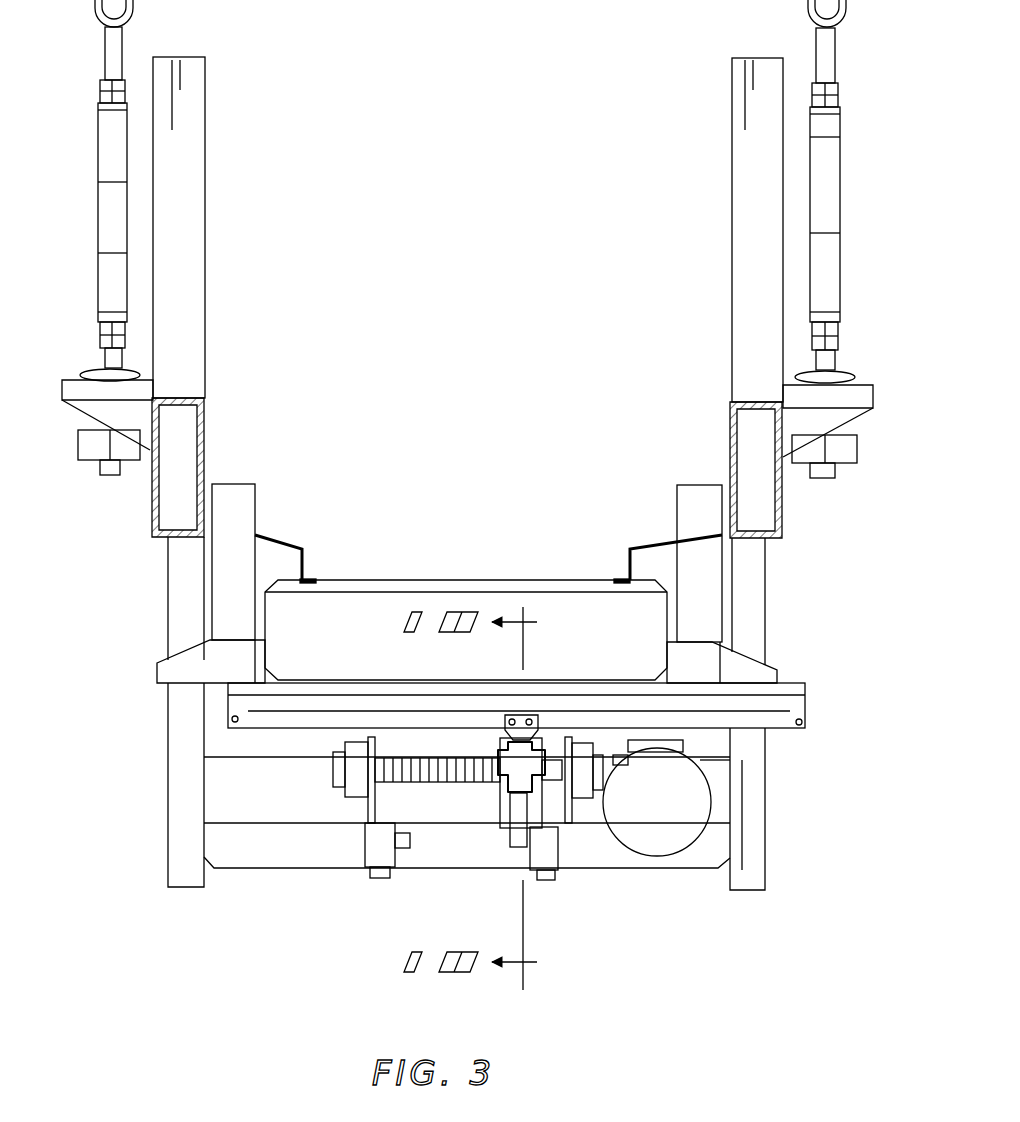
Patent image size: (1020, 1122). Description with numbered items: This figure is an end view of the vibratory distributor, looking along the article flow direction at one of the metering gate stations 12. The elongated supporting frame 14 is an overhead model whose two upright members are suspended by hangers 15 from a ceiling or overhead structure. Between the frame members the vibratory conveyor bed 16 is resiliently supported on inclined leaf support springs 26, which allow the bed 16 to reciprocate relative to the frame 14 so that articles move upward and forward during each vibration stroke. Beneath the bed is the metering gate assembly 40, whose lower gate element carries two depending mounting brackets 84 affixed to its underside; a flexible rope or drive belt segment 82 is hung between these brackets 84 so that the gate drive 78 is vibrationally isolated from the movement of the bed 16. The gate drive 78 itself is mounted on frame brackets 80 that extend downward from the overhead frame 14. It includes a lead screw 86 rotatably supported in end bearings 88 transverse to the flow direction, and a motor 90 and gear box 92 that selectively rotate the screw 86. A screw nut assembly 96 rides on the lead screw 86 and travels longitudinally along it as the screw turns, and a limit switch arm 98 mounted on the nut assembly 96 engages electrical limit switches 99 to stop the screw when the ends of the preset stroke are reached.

The metering gate station 12 is at (498, 508).
The supporting frame 14 is at (180, 228).
The hanger 15 is at (112, 222).
The vibratory conveyor bed 16 is at (352, 631).
The support spring 26 is at (235, 520).
The metering gate assembly 40 is at (790, 644).
The gate drive 78 is at (782, 783).
The frame bracket 80 is at (742, 812).
The drive belt segment 82 is at (300, 718).
The mounting bracket 84 is at (235, 705).
The lead screw 86 is at (480, 790).
The end bearing 88 is at (360, 775).
The motor 90 is at (678, 810).
The gear box 92 is at (690, 738).
The screw nut assembly 96 is at (495, 846).
The limit switch arm 98 is at (512, 818).
The electrical limit switch 99 is at (412, 830).